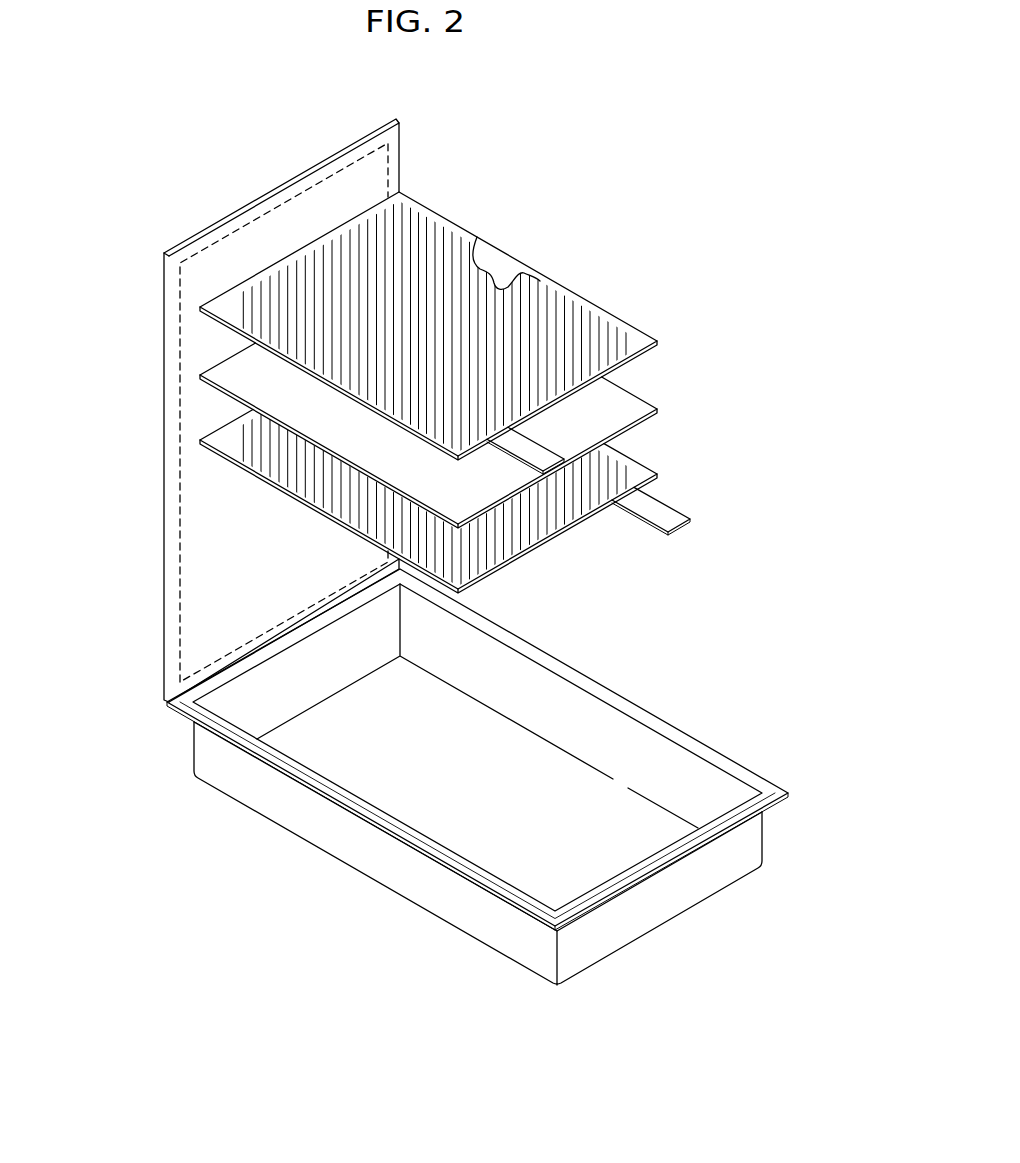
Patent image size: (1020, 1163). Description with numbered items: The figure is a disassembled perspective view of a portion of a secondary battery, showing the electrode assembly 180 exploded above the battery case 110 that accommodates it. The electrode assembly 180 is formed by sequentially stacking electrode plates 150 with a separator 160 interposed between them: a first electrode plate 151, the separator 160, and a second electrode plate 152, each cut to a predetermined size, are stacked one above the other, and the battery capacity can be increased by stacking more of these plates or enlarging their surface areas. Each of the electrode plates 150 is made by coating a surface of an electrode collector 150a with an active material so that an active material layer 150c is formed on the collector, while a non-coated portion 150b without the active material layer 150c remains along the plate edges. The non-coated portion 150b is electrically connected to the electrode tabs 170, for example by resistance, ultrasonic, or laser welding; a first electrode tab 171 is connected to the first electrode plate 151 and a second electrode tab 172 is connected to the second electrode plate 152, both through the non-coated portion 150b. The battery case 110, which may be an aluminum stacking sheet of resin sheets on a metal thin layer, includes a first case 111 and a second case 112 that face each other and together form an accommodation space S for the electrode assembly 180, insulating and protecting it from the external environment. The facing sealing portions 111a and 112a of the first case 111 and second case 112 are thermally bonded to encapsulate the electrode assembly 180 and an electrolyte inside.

The battery case 110 is at (167, 739).
The first case 111 is at (165, 592).
The sealing portion of the first case 111a is at (289, 182).
The second case 112 is at (712, 750).
The sealing portion of the second case 112a is at (485, 892).
The accommodation space S is at (414, 787).
The electrode assembly 180 is at (620, 231).
The electrode plates 150 is at (464, 375).
The second electrode plate 152 is at (580, 297).
The first electrode plate 151 is at (627, 465).
The electrode collector 150a is at (510, 268).
The non-coated portion 150b is at (405, 204).
The active material layer 150c is at (457, 246).
The separator 160 is at (630, 405).
The electrode tabs 170 is at (625, 495).
The second electrode tab 172 is at (541, 461).
The first electrode tab 171 is at (679, 519).